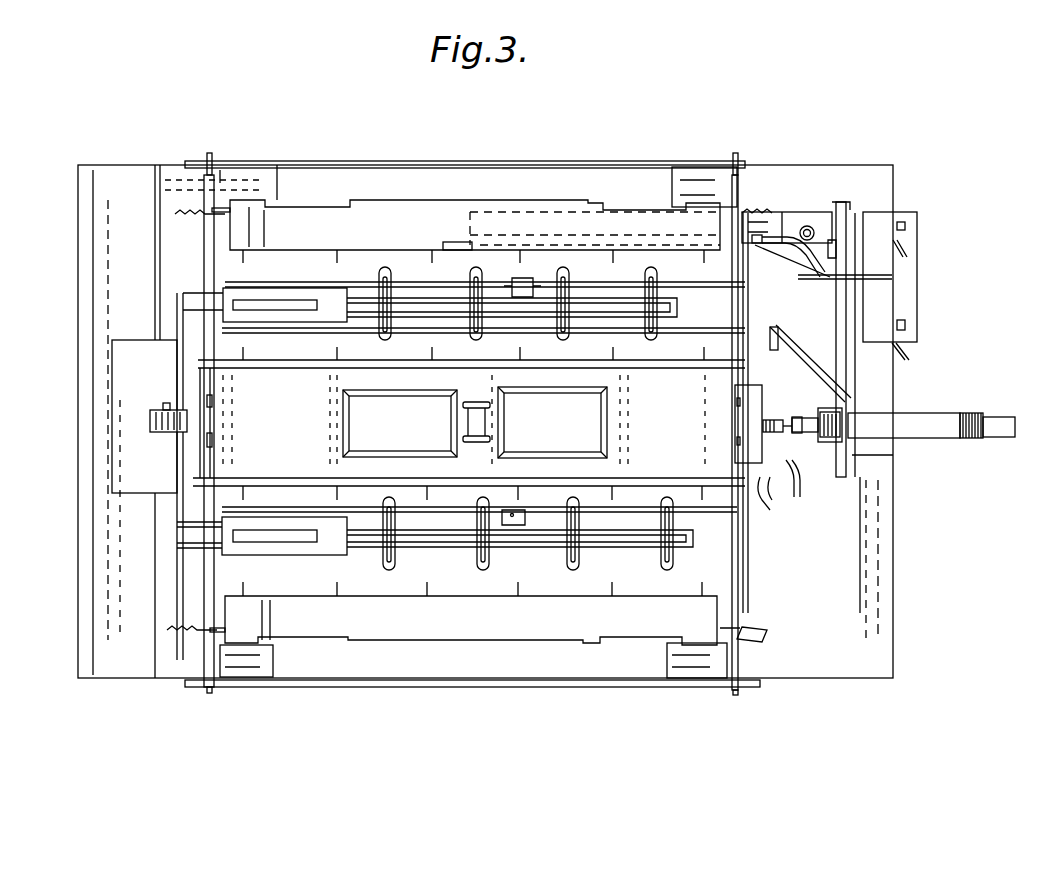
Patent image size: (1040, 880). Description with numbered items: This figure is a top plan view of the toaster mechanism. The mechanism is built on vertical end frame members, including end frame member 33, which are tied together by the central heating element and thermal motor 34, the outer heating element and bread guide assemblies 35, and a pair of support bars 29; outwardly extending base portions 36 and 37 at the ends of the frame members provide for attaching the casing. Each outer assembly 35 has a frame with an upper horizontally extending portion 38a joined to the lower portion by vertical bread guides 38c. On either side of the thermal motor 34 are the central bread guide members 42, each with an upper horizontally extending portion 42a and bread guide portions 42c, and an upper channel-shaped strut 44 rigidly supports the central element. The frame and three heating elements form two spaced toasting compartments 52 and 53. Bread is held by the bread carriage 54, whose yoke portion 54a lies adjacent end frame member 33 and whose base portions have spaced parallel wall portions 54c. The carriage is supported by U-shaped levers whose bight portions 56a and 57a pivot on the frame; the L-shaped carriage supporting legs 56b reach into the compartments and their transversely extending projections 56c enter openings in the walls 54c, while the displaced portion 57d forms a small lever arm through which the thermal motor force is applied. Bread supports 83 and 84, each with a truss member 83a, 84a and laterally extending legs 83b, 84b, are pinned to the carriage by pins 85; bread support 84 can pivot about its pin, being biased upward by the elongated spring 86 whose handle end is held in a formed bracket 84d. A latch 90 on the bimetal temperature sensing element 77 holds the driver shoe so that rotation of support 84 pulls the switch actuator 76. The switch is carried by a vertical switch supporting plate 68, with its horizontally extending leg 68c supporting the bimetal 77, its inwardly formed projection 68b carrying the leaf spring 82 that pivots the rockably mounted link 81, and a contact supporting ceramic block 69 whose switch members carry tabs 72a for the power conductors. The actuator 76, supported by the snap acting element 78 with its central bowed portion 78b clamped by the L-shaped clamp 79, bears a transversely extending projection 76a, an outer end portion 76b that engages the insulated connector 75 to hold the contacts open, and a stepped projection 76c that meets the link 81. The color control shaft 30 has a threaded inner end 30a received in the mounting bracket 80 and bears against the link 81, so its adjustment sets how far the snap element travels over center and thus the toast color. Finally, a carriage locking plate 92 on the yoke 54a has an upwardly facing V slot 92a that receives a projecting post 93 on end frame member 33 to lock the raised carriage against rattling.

The support bars 29 is at (432, 160).
The color control shaft 30 is at (938, 422).
The threaded inner end of control shaft 30a is at (810, 430).
The end frame member 33 is at (205, 587).
The central heating element and thermal motor 34 is at (237, 375).
The outer heating element and bread guide assemblies 35 is at (300, 230).
The base portion 36 is at (877, 648).
The base portion 37 is at (148, 663).
The upper horizontally extending portion 38a is at (390, 630).
The bread guides 38c is at (338, 262).
The central bread guide members 42 is at (287, 480).
The upper horizontally extending portions 42a is at (257, 480).
The bread guide portions 42c is at (425, 353).
The upper channel-shaped strut 44 is at (175, 377).
The toasting compartment 52 is at (722, 577).
The toasting compartment 53 is at (630, 265).
The bread carriage 54 is at (103, 382).
The yoke portion 54a is at (110, 413).
The wall portions 54c is at (323, 297).
The bight portion 56a is at (737, 468).
The carriage supporting legs 56b is at (538, 370).
The transversely extending projections 56c is at (280, 330).
The bight portion 57a is at (760, 517).
The displaced portion 57d is at (760, 490).
The switch supporting plate 68 is at (850, 403).
The inwardly formed projection 68b is at (830, 363).
The horizontally extending leg 68c is at (753, 220).
The contact supporting ceramic block 69 is at (872, 217).
The laterally extending tab 72a is at (900, 245).
The insulated connector 75 is at (900, 272).
The switch actuator 76 is at (538, 232).
The transversely extending projection 76a is at (835, 245).
The outer end portion 76b is at (877, 280).
The stepped projection 76c is at (820, 311).
The bimetal temperature sensing element 77 is at (453, 240).
The snap acting element 78 is at (845, 208).
The central bowed portion 78b is at (791, 266).
The L-shaped clamp 79 is at (795, 222).
The mounting bracket 80 is at (830, 443).
The rockably mounted link 81 is at (788, 303).
The leaf spring 82 is at (733, 388).
The bread support 83 is at (603, 540).
The truss member 83a is at (542, 538).
The laterally extending legs 83b is at (667, 570).
The bread support 84 is at (627, 305).
The truss member 84a is at (600, 305).
The laterally extending legs 84b is at (657, 285).
The formed bracket 84d is at (518, 282).
The pins 85 is at (245, 287).
The elongated spring 86 is at (435, 280).
The latch 90 is at (457, 242).
The carriage locking plate 92 is at (178, 473).
The V slot 92a is at (163, 407).
The projecting post 93 is at (160, 434).